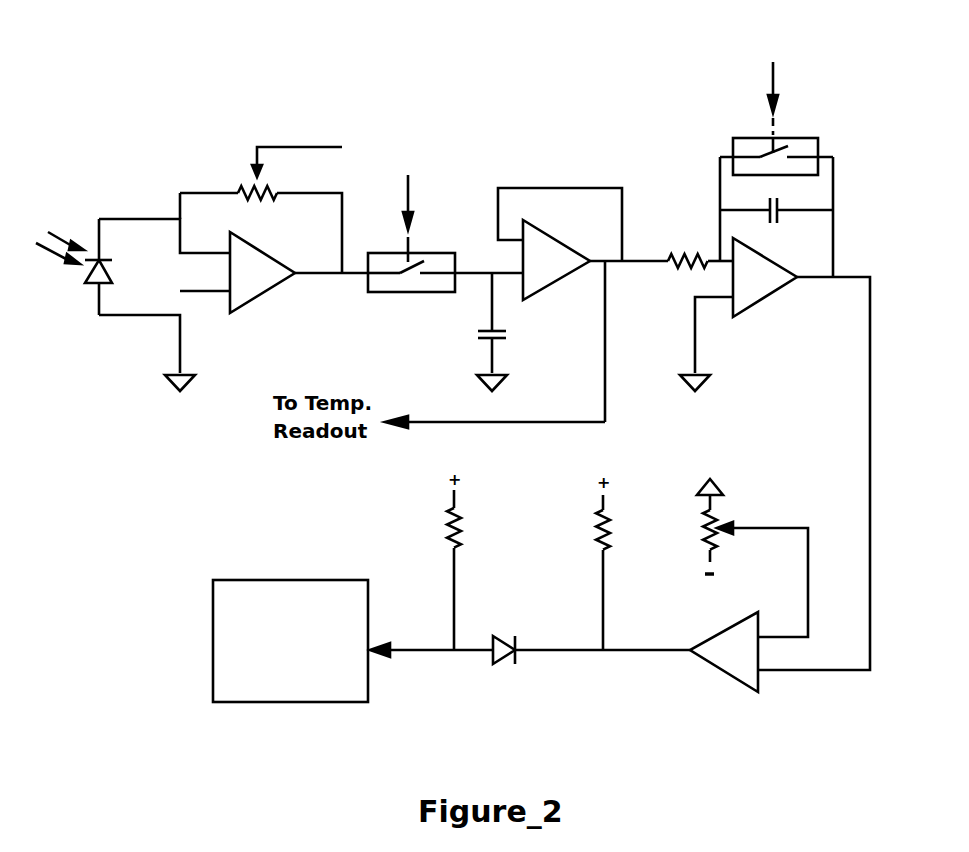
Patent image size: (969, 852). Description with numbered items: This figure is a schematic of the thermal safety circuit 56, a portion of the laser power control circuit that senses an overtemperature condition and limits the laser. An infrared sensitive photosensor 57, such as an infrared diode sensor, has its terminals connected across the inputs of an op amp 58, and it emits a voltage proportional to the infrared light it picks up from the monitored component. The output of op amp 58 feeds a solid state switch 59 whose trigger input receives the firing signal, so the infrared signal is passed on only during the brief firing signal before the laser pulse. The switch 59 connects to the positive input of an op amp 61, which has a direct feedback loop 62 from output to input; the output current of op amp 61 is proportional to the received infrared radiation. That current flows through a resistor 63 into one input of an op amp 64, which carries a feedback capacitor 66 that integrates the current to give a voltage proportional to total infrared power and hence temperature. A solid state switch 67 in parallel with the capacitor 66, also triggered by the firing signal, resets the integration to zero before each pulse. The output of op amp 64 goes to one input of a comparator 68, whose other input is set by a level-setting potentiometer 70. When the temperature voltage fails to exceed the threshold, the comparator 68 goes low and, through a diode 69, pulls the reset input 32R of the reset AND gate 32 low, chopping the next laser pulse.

The thermal safety circuit 56 is at (470, 100).
The infrared sensitive photosensor 57 is at (97, 260).
The op amp 58 is at (273, 283).
The solid state switch 59 is at (240, 185).
The op amp 61 is at (533, 238).
The direct feedback loop 62 is at (577, 188).
The resistor 63 is at (683, 253).
The op amp 64 is at (767, 283).
The feedback capacitor 66 is at (779, 205).
The solid state switch 67 is at (735, 138).
The comparator 68 is at (723, 658).
The diode 69 is at (502, 653).
The level-setting potentiometer 70 is at (717, 512).
The reset AND gate 32 is at (260, 585).
The reset input 32R is at (412, 587).